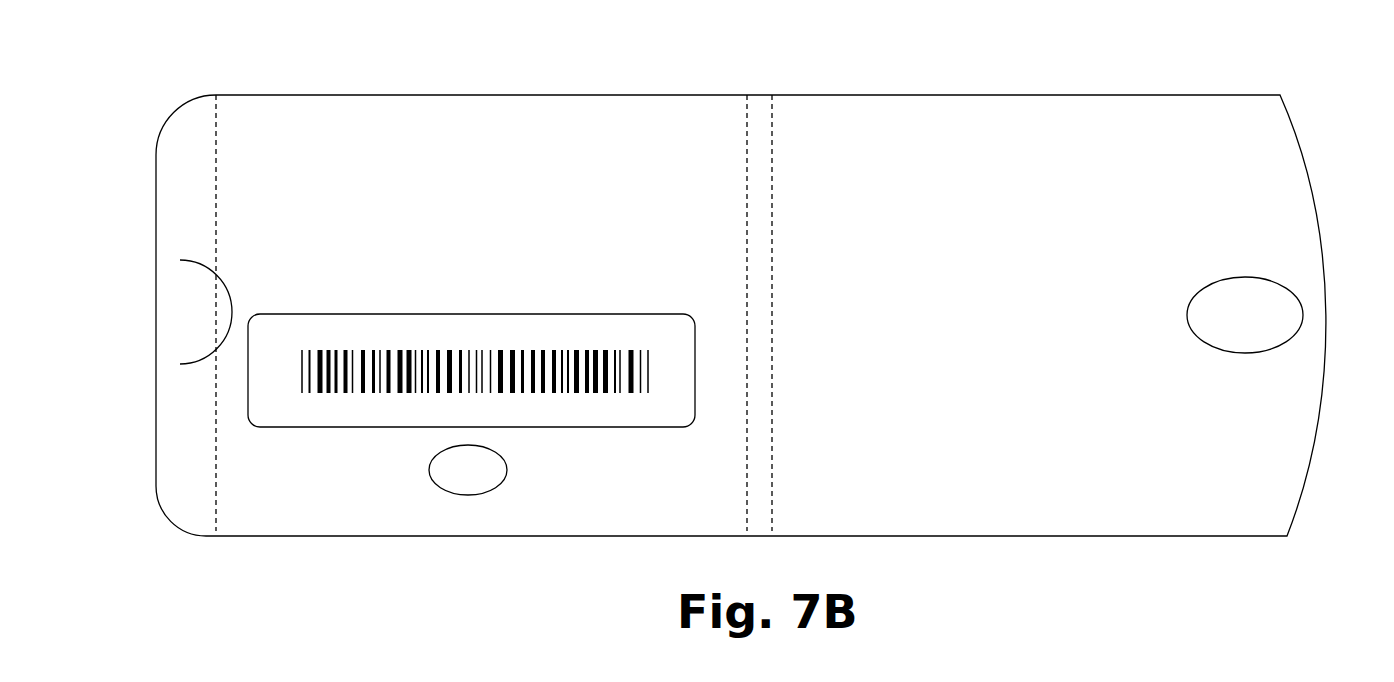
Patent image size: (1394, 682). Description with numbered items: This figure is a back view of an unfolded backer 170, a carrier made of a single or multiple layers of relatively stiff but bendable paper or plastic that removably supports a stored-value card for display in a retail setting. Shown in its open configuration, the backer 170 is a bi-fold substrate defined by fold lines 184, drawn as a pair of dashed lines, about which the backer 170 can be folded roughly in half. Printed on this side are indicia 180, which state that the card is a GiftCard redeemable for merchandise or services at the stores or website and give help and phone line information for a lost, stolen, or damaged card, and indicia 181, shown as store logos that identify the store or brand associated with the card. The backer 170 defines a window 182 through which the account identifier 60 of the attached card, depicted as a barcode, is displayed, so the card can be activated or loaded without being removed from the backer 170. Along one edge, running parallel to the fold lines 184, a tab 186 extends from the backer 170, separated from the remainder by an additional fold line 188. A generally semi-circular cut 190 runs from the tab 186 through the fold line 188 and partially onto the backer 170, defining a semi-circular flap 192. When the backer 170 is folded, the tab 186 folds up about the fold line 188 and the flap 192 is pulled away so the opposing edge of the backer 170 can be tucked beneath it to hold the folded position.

The backer 170 is at (1140, 54).
The indicia 180 is at (622, 137).
The fold lines 184 is at (747, 117).
The tab 186 is at (182, 160).
The fold line 188 is at (216, 507).
The semi-circular flap 192 is at (161, 312).
The semi-circular cut 190 is at (195, 363).
The account identifier 60 is at (298, 373).
The window 182 is at (390, 406).
The indicia 181 is at (503, 478).